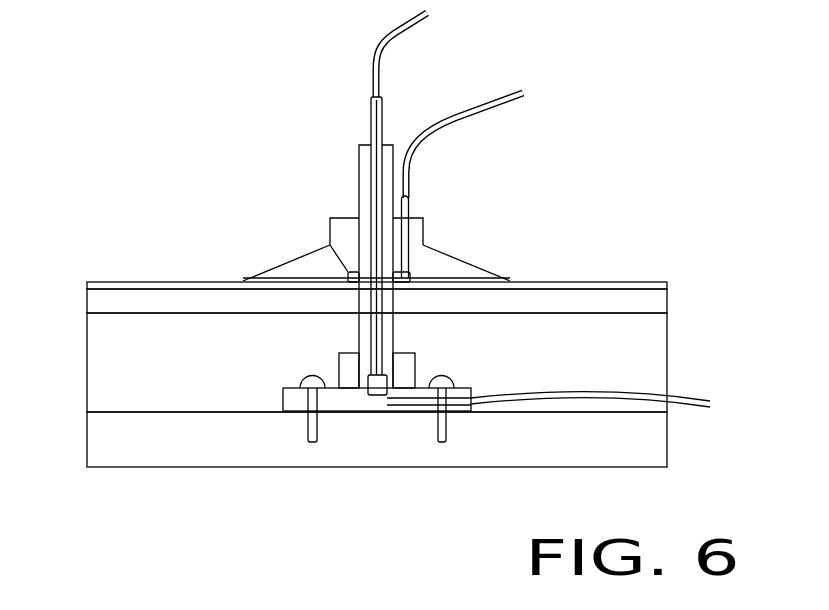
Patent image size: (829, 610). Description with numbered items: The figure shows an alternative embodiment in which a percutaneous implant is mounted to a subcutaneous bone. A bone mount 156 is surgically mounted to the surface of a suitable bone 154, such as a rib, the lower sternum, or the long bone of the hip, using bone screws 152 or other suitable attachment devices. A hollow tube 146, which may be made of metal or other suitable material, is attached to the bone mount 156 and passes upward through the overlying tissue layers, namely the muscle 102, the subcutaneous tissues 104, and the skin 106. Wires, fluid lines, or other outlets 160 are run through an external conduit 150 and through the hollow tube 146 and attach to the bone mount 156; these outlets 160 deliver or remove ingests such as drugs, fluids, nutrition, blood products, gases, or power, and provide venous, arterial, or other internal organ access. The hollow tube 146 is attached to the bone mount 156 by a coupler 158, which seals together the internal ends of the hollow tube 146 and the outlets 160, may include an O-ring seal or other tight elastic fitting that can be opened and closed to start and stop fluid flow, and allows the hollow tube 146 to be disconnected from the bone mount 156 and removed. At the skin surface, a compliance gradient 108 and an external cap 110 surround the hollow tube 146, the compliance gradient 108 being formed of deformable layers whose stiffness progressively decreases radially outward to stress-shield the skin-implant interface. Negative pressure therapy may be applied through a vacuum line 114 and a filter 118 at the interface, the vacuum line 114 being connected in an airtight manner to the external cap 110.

The muscle 102 is at (97, 358).
The subcutaneous tissues 104 is at (103, 300).
The skin 106 is at (173, 282).
The compliance gradient 108 is at (448, 277).
The external cap 110 is at (427, 237).
The vacuum tubing 114 is at (480, 117).
The filter 118 is at (328, 243).
The hollow tube 146 is at (359, 188).
The external conduit 150 is at (382, 118).
The bone screws 152 is at (308, 427).
The bone 154 is at (100, 439).
The bone mount 156 is at (350, 402).
The coupler 158 is at (450, 415).
The outlets 160 is at (380, 42).